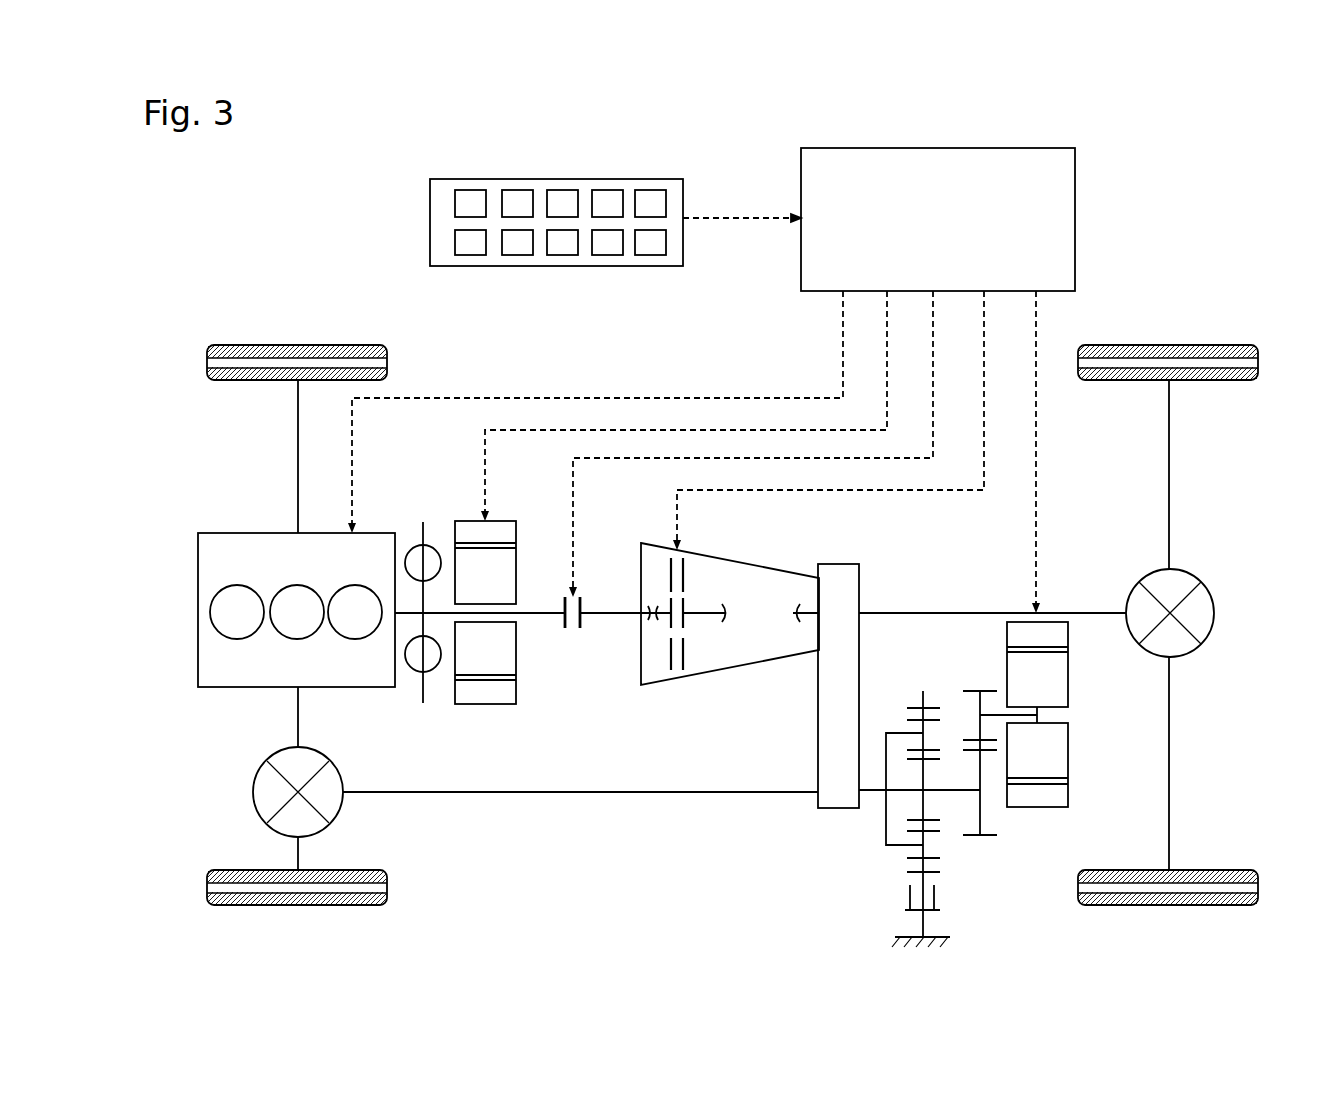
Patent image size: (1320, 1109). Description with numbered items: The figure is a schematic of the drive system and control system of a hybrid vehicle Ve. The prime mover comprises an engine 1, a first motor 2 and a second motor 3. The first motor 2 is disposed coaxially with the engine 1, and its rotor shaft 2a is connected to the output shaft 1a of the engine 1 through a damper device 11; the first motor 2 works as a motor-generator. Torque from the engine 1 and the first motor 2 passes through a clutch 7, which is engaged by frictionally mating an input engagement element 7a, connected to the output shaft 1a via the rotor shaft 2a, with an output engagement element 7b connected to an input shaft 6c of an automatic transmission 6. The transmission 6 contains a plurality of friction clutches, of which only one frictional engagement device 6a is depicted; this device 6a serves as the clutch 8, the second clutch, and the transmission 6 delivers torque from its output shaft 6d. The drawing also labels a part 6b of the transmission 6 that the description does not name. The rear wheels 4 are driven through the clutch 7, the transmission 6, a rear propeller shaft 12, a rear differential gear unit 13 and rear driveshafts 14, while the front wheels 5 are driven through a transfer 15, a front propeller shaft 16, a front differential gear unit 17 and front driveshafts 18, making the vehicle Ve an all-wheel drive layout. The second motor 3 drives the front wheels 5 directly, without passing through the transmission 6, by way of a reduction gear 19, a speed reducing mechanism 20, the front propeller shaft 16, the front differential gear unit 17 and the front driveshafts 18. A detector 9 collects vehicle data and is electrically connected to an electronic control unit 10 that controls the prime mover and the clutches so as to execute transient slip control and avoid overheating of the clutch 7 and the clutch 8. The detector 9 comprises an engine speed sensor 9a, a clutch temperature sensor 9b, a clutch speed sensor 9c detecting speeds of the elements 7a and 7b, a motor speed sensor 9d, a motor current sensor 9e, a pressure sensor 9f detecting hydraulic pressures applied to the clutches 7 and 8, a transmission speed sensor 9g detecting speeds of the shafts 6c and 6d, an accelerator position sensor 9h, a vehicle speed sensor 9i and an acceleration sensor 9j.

The engine 1 is at (240, 533).
The output shaft 1a is at (423, 690).
The first motor 2 is at (452, 732).
The rotor shaft 2a is at (528, 618).
The second motor 3 is at (1088, 787).
The rear wheels 4 is at (1173, 345).
The front wheels 5 is at (298, 345).
The automatic transmission 6 is at (730, 636).
The frictional engagement device 6a is at (697, 633).
The transmission input shaft 6b is at (663, 673).
The input shaft 6c is at (617, 610).
The output shaft 6d is at (805, 603).
The clutch 7 is at (583, 676).
The input engagement element 7a is at (563, 632).
The output engagement element 7b is at (583, 632).
The clutch 8 is at (719, 641).
The detector 9 is at (683, 189).
The engine speed sensor 9a is at (470, 190).
The clutch temperature sensor 9b is at (517, 190).
The clutch speed sensor 9c is at (562, 190).
The motor speed sensor 9d is at (607, 190).
The motor current sensor 9e is at (650, 190).
The pressure sensor 9f is at (468, 255).
The transmission speed sensor 9g is at (515, 255).
The accelerator position sensor 9h is at (560, 255).
The vehicle speed sensor 9i is at (605, 255).
The acceleration sensor 9j is at (650, 255).
The electronic control unit 10 is at (1075, 218).
The damper device 11 is at (418, 512).
The rear propeller shaft 12 is at (1085, 612).
The rear differential gear unit 13 is at (1214, 613).
The rear driveshafts 14 is at (1169, 466).
The transfer 15 is at (838, 832).
The front propeller shaft 16 is at (553, 792).
The front differential gear unit 17 is at (253, 795).
The front driveshafts 18 is at (298, 456).
The reduction gear 19 is at (999, 857).
The speed reducing mechanism 20 is at (962, 910).
The vehicle Ve is at (1172, 156).